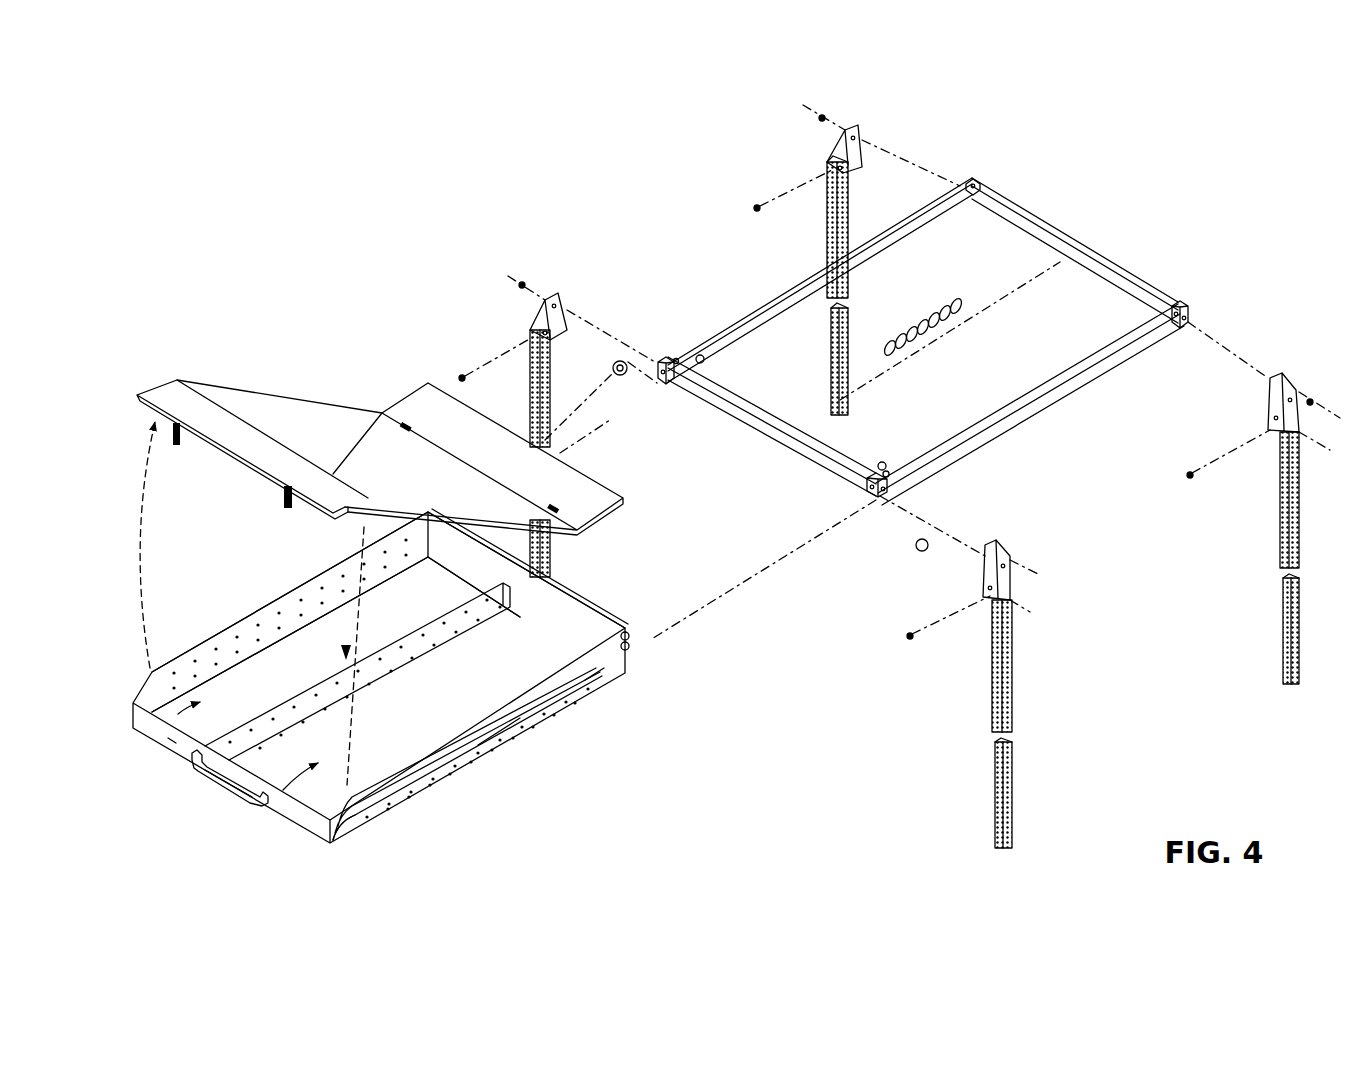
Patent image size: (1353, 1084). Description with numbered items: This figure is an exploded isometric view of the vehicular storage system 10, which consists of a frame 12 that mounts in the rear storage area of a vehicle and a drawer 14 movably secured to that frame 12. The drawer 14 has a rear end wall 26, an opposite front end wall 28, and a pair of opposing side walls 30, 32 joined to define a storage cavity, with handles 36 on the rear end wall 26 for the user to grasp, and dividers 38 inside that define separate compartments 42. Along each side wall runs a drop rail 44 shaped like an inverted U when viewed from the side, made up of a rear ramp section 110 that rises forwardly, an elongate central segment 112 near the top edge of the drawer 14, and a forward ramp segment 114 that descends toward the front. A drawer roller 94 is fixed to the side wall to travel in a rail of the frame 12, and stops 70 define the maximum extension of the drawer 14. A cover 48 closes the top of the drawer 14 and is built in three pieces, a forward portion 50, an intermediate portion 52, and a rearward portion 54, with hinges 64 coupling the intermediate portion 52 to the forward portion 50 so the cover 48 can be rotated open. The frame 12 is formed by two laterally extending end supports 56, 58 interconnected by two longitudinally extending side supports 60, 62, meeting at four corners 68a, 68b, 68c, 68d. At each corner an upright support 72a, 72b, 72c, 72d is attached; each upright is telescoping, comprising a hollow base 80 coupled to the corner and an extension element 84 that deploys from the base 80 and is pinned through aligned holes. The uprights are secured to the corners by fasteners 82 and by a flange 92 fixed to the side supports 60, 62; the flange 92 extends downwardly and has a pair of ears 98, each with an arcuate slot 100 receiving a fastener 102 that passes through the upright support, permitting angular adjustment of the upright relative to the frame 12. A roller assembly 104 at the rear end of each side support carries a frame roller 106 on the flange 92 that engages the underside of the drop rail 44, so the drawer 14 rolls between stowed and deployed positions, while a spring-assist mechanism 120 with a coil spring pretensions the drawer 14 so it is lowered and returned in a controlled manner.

The vehicular storage system 10 is at (899, 464).
The frame 12 is at (899, 466).
The drawer 14 is at (453, 695).
The rear end wall 26 is at (198, 750).
The front end wall 28 is at (598, 598).
The side wall 30 is at (488, 772).
The side wall 32 is at (235, 648).
The handle 36 is at (213, 792).
The divider 38 is at (172, 740).
The compartment 42 is at (178, 718).
The drop rail 44 is at (430, 770).
The cover 48 is at (352, 430).
The forward portion 50 is at (440, 395).
The intermediate portion 52 is at (253, 410).
The rearward portion 54 is at (396, 531).
The end support 56 is at (758, 400).
The end support 58 is at (1070, 242).
The side support 60 is at (1062, 398).
The side support 62 is at (922, 230).
The hinge 64 is at (403, 424).
The corner 68a is at (658, 384).
The corner 68b is at (868, 496).
The corner 68c is at (1186, 300).
The corner 68d is at (968, 182).
The stop 70 is at (700, 354).
The upright support 72a is at (550, 416).
The upright support 72b is at (1012, 708).
The upright support 72c is at (1282, 560).
The upright support 72d is at (850, 222).
The hollow base 80 is at (828, 240).
The fastener 82 is at (830, 116).
The extension element 84 is at (850, 345).
The flange 92 is at (540, 312).
The drawer roller 94 is at (645, 632).
The ear 98 is at (1000, 560).
The arcuate slot 100 is at (1272, 438).
The fastener 102 is at (757, 204).
The roller assembly 104 is at (590, 300).
The frame roller 106 is at (622, 360).
The rear ramp section 110 is at (350, 820).
The central segment 112 is at (500, 745).
The forward ramp segment 114 is at (600, 688).
The spring-assist mechanism 120 is at (935, 340).